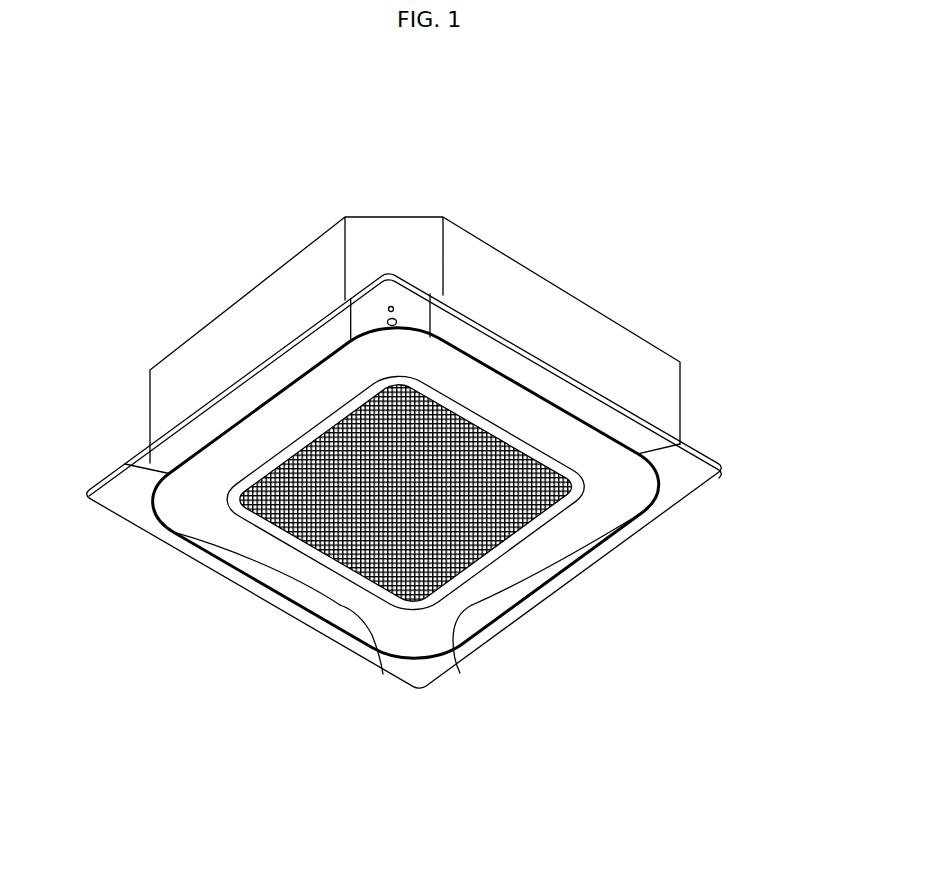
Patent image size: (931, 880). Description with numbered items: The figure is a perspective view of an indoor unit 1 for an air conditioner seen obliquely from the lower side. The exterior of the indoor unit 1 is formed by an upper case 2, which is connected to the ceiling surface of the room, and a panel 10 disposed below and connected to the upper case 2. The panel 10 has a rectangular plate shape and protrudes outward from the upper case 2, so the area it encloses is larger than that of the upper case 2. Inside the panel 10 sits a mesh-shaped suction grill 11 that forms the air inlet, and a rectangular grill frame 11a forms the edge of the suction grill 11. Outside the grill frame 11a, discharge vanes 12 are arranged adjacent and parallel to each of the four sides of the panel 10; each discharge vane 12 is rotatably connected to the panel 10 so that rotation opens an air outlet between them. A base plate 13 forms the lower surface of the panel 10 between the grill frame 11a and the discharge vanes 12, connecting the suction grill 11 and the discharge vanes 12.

The indoor unit 1 is at (76, 114).
The upper case 2 is at (657, 390).
The panel 10 is at (672, 480).
The suction grill 11 is at (500, 517).
The grill frame 11a is at (365, 590).
The discharge vane 12 is at (213, 453).
The base plate 13 is at (413, 635).